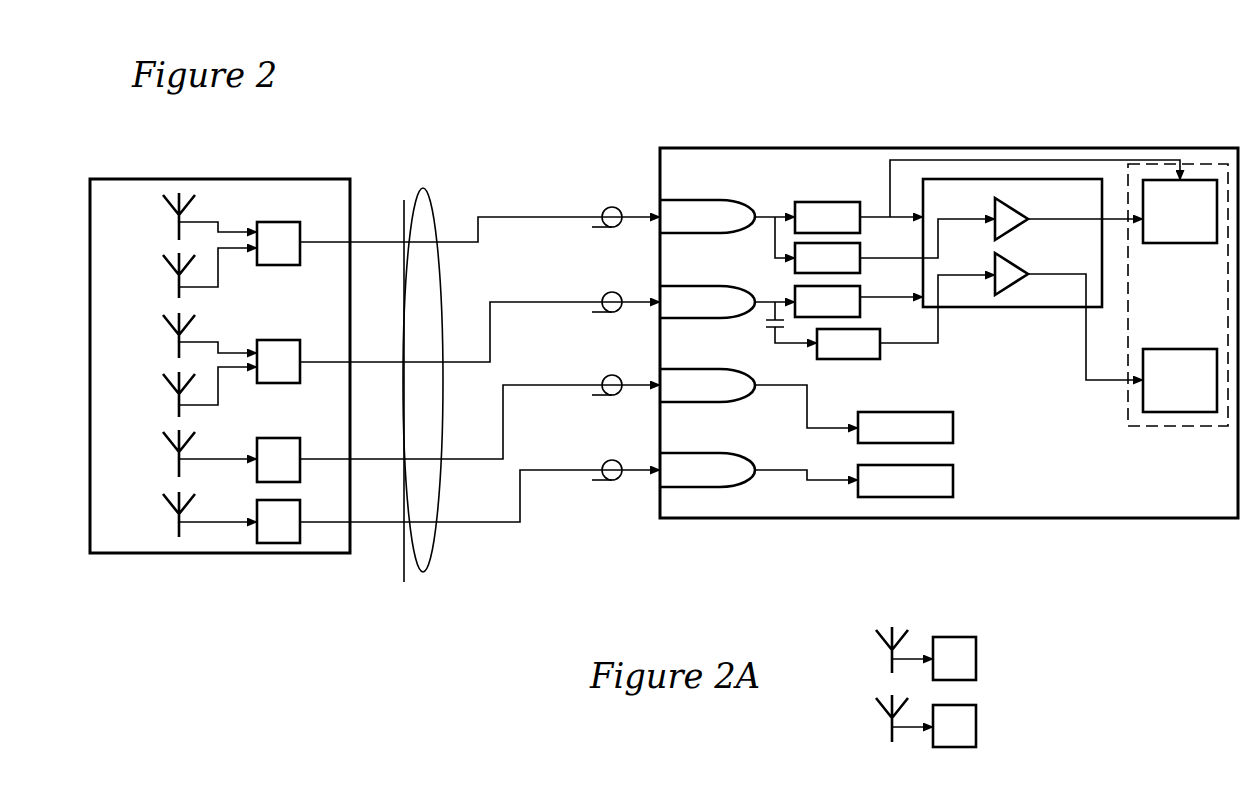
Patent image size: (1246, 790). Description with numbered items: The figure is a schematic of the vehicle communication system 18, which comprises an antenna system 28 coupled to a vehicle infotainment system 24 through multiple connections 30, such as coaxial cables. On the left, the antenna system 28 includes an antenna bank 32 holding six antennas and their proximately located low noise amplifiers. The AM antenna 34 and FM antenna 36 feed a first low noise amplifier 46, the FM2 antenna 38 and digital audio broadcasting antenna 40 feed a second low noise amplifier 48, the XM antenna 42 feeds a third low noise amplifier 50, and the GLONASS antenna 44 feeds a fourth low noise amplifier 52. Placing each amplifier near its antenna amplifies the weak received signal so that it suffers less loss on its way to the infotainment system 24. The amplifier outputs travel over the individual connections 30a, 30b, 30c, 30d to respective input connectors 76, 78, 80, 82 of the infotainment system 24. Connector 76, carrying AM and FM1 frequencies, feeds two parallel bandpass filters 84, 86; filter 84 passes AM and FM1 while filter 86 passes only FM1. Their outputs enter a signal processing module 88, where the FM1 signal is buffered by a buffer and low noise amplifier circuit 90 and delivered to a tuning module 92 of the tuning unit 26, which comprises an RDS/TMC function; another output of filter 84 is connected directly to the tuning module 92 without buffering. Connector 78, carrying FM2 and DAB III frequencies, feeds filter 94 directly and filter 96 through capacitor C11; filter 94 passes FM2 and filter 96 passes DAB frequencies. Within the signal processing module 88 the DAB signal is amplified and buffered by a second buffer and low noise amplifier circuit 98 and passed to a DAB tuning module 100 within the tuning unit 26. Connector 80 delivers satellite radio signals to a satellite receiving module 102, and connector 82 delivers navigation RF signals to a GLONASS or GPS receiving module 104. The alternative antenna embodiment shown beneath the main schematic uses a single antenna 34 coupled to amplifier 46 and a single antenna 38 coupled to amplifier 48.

In FIG. 2, the communication system 18 is at (598, 137).
In FIG. 2, the vehicle infotainment system 24 is at (758, 146).
In FIG. 2, the tuning unit 26 is at (1172, 428).
In FIG. 2, the antenna system 28 is at (353, 177).
In FIG. 2, the connections 30 is at (422, 401).
In FIG. 2, the connection 30a is at (489, 217).
In FIG. 2, the connection 30b is at (500, 302).
In FIG. 2, the connection 30c is at (516, 385).
In FIG. 2, the connection 30d is at (536, 470).
In FIG. 2, the antenna bank 32 is at (149, 546).
In FIG. 2, the antenna 34 is at (178, 224).
In FIG. 2A, the antenna 34 is at (891, 660).
In FIG. 2, the antenna 36 is at (178, 288).
In FIG. 2, the antenna 38 is at (178, 344).
In FIG. 2A, the antenna 38 is at (891, 728).
In FIG. 2, the antenna 40 is at (178, 398).
In FIG. 2, the antenna 42 is at (178, 460).
In FIG. 2, the antenna 44 is at (178, 523).
In FIG. 2, the low noise amplifier 46 is at (278, 243).
In FIG. 2A, the low noise amplifier 46 is at (954, 658).
In FIG. 2, the low noise amplifier 48 is at (278, 361).
In FIG. 2A, the low noise amplifier 48 is at (954, 726).
In FIG. 2, the low noise amplifier 50 is at (278, 460).
In FIG. 2, the low noise amplifier 52 is at (278, 521).
In FIG. 2, the input connector 76 is at (727, 229).
In FIG. 2, the input connector 78 is at (727, 302).
In FIG. 2, the input connector 80 is at (759, 398).
In FIG. 2, the input connector 82 is at (759, 470).
In FIG. 2, the bandpass filter 84 is at (987, 196).
In FIG. 2, the bandpass filter 86 is at (895, 246).
In FIG. 2, the signal processing module 88 is at (1012, 243).
In FIG. 2, the buffer and low noise amplifier circuit 90 is at (1020, 227).
In FIG. 2, the tuning module 92 is at (1180, 211).
In FIG. 2, the bandpass filter 94 is at (859, 301).
In FIG. 2, the bandpass filter 96 is at (906, 317).
In FIG. 2, the buffer and low noise amplifier circuit 98 is at (1020, 282).
In FIG. 2, the tuning module 100 is at (1180, 380).
In FIG. 2, the module 102 is at (905, 427).
In FIG. 2, the module 104 is at (905, 481).
In FIG. 2, the capacitor C11 is at (772, 322).